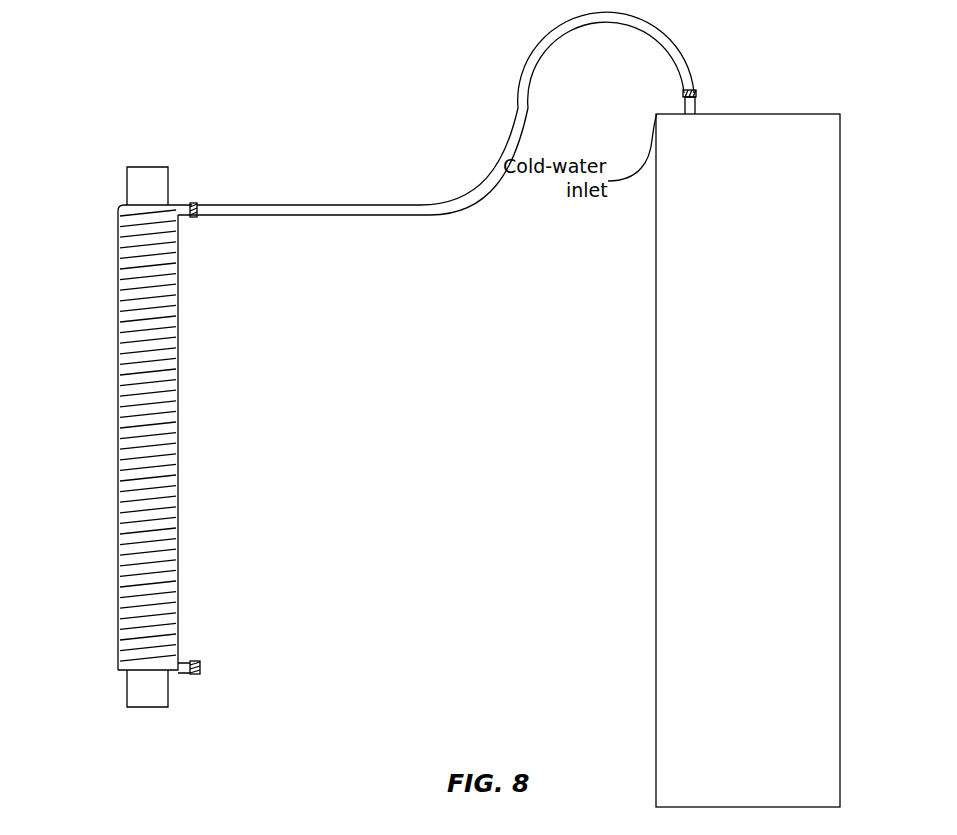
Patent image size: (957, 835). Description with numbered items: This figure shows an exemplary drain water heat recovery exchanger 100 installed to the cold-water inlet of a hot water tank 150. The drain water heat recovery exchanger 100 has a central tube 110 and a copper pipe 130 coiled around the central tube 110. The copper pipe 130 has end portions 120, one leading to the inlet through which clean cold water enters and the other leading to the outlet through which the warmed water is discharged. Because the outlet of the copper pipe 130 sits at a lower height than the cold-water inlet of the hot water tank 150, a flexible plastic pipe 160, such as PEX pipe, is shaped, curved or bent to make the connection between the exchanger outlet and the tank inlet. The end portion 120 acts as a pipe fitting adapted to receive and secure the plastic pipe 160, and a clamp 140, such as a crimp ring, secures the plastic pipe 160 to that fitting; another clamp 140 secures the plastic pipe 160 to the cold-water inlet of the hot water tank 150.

The drain water heat recovery exchanger 100 is at (214, 511).
The central tube 110 is at (137, 188).
The end portion 120 is at (200, 213).
The copper pipe 130 is at (128, 362).
The clamp 140 is at (195, 205).
The hot water tank 150 is at (800, 392).
The plastic pipe 160 is at (430, 204).